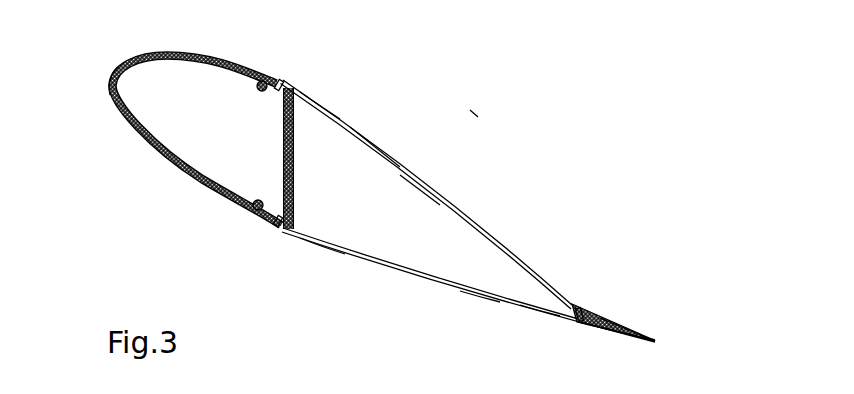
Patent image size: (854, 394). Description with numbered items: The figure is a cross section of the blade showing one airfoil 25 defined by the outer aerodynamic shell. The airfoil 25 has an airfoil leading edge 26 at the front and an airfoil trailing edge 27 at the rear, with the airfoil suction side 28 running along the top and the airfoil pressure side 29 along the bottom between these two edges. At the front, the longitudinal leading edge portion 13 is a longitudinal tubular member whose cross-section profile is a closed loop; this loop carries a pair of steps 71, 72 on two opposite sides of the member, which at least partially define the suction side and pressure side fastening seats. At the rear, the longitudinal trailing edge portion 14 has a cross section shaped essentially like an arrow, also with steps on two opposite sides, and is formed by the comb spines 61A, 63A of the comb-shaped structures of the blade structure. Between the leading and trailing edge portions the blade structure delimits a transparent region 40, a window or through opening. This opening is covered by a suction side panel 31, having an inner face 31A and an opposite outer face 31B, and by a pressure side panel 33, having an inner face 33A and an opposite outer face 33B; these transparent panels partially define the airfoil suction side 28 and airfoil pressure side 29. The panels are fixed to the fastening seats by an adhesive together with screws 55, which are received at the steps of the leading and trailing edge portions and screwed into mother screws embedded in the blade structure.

The longitudinal leading edge portion 13 is at (143, 177).
The longitudinal trailing edge portion 14 is at (660, 294).
The airfoil 25 is at (470, 106).
The airfoil leading edge 26 is at (110, 76).
The airfoil trailing edge 27 is at (654, 341).
The airfoil suction side 28 is at (332, 108).
The airfoil pressure side 29 is at (330, 253).
The suction side panel 31 is at (455, 202).
The inner face 31A is at (368, 154).
The outer face 31B is at (417, 174).
The pressure side panel 33 is at (410, 283).
The inner face 33A is at (487, 296).
The outer face 33B is at (537, 318).
The transparent region 40 is at (397, 231).
The screw 55 is at (278, 84).
The comb spine 61A is at (610, 318).
The comb spine 63A is at (627, 332).
The step 71 is at (262, 90).
The step 72 is at (262, 206).